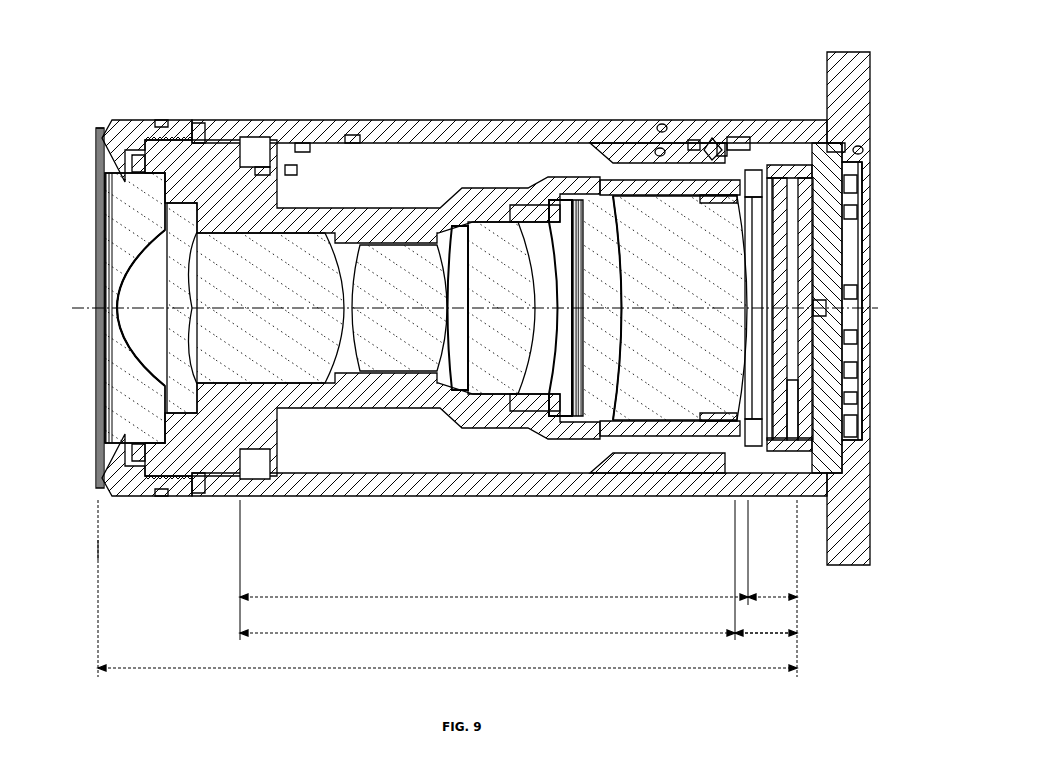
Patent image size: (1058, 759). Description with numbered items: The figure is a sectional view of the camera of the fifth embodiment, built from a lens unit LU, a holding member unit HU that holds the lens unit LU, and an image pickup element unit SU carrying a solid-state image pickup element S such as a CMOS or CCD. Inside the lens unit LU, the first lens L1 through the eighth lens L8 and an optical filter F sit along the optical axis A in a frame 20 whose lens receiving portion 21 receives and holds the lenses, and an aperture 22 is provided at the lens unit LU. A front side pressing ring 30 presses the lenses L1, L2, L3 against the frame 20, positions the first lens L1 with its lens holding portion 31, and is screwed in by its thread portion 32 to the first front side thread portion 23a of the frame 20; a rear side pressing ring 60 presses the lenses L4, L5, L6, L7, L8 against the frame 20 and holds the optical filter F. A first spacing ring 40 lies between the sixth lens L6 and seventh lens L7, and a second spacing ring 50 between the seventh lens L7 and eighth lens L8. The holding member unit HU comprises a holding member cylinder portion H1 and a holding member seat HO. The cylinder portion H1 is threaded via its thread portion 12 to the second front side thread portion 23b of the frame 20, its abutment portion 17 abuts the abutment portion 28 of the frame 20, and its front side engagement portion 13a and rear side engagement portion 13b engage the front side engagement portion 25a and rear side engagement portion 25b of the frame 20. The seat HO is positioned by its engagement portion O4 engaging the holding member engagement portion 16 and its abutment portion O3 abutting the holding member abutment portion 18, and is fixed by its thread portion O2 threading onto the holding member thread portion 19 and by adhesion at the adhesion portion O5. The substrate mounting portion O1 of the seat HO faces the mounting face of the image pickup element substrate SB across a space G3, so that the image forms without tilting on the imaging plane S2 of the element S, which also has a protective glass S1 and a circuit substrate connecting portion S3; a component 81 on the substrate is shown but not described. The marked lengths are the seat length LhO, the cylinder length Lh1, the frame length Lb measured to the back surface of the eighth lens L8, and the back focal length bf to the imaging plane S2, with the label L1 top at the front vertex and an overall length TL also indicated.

The optical axis A is at (82, 312).
The holding member cylinder portion H1 is at (466, 120).
The holding member unit HU is at (612, 69).
The holding member seat HO is at (853, 51).
The holding member engagement portion 16 is at (645, 150).
The frame 20 is at (398, 207).
The lens receiving portion 21 is at (150, 275).
The aperture 22 is at (352, 140).
The first front side thread portion 23a is at (152, 122).
The second front side thread portion 23b is at (197, 123).
The front side engagement portion 25a is at (290, 168).
The rear side engagement portion 25b is at (693, 140).
The thread portion 12 is at (227, 140).
The front side engagement portion 13a is at (303, 160).
The rear side engagement portion 13b is at (722, 140).
The abutment portion 17 is at (218, 168).
The holding member abutment portion 18 is at (752, 168).
The holding member thread portion 19 is at (716, 137).
The abutment portion 28 is at (262, 165).
The front side pressing ring 30 is at (113, 125).
The lens holding portion 31 is at (95, 146).
The thread portion 32 is at (128, 120).
The first spacing ring 40 is at (527, 203).
The second spacing ring 50 is at (567, 200).
The rear side pressing ring 60 is at (845, 146).
The electronic component 81 is at (858, 181).
The substrate mounting portion O1 is at (864, 147).
The thread portion O2 is at (704, 135).
The abutment portion O3 is at (738, 142).
The engagement portion O4 is at (657, 147).
The adhesion portion O5 is at (660, 124).
The first lens L1 is at (148, 494).
The second lens L2 is at (193, 494).
The third lens L3 is at (230, 368).
The fourth lens L4 is at (407, 363).
The fifth lens L5 is at (455, 372).
The sixth lens L6 is at (497, 380).
The seventh lens L7 is at (557, 392).
The eighth lens L8 is at (668, 403).
The optical filter F is at (752, 405).
The protective glass S1 is at (777, 451).
The space G3 is at (814, 438).
The solid-state image pickup element S is at (822, 458).
The image pickup element unit SU is at (876, 242).
The image pickup element substrate SB is at (860, 247).
The imaging plane S2 is at (867, 402).
The circuit substrate connecting portion S3 is at (842, 365).
The lens unit LU is at (83, 450).
The object-side vertex of first lens L1 top is at (98, 548).
The total length TL is at (447, 588).
The length of the frame Lb is at (518, 570).
The back focal length bf is at (766, 628).
The length of the holding member cylinder portion Lh1 is at (494, 552).
The length of the holding member seat LhO is at (772, 592).